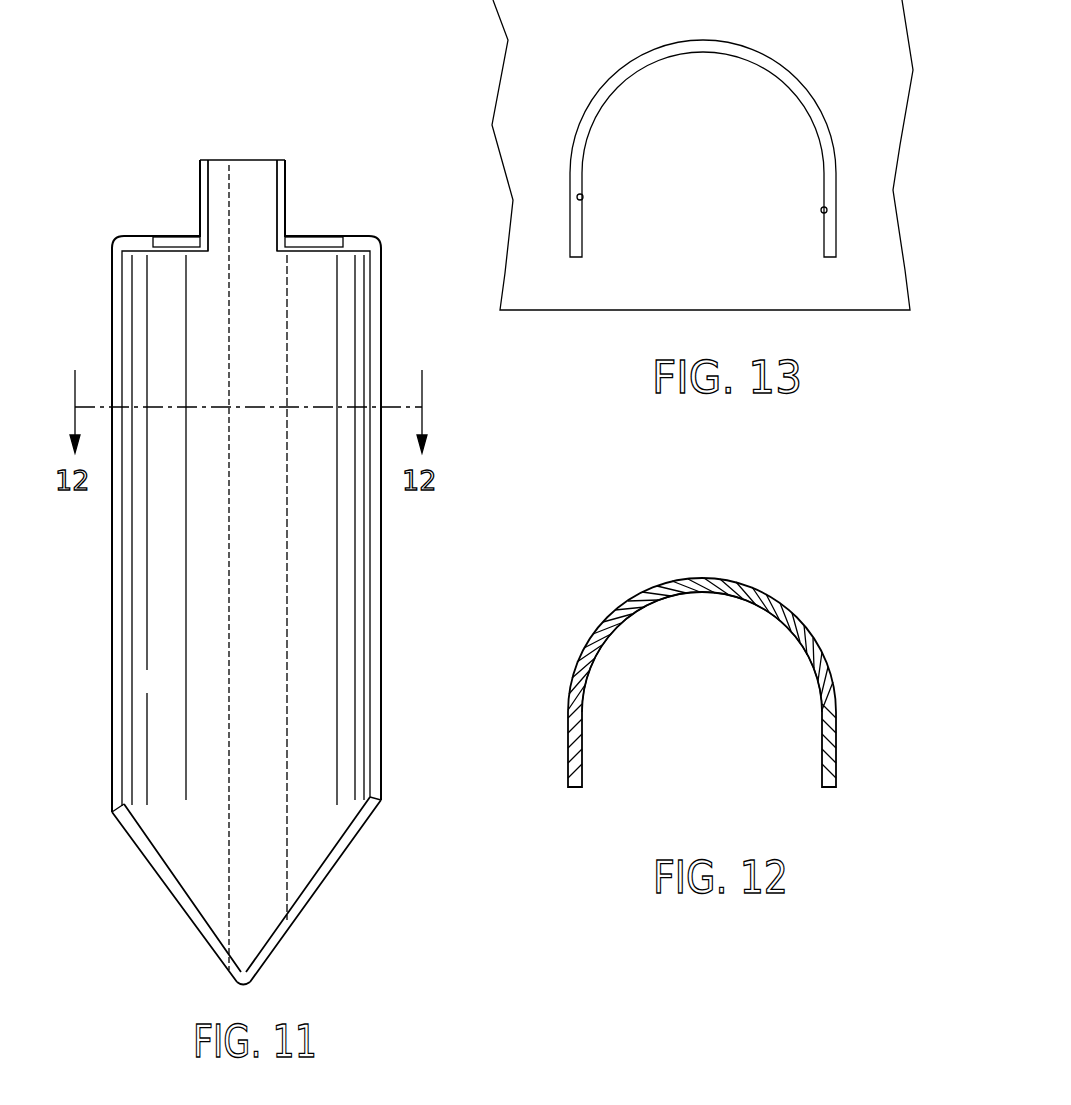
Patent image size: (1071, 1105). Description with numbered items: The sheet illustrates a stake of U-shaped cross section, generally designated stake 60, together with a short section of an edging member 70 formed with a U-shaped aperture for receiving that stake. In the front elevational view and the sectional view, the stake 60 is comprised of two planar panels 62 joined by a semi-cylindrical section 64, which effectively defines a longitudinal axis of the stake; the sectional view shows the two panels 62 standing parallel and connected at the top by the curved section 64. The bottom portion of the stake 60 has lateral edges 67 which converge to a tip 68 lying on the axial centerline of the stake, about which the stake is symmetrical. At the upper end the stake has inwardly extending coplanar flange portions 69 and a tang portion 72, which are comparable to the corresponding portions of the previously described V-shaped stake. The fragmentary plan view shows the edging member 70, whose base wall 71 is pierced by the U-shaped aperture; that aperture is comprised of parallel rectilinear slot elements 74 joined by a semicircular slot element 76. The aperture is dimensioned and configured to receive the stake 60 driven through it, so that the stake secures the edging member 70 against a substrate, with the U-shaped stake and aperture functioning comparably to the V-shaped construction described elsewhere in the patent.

In FIG. 11, the stake 60 is at (268, 570).
In FIG. 12, the stake 60 is at (729, 660).
In FIG. 11, the planar panels 62 is at (381, 333).
In FIG. 12, the planar panels 62 is at (582, 722).
In FIG. 11, the semi-cylindrical section 64 is at (186, 728).
In FIG. 12, the semi-cylindrical section 64 is at (702, 578).
In FIG. 11, the lateral edges 67 is at (160, 873).
In FIG. 11, the tip 68 is at (252, 978).
In FIG. 11, the coplanar flange portions 69 is at (178, 237).
In FIG. 11, the tang portion 72 is at (285, 185).
In FIG. 13, the edging member 70 is at (674, 155).
In FIG. 13, the base wall 71 is at (875, 150).
In FIG. 13, the rectilinear slot elements 74 is at (583, 197).
In FIG. 13, the semicircular slot element 76 is at (730, 52).